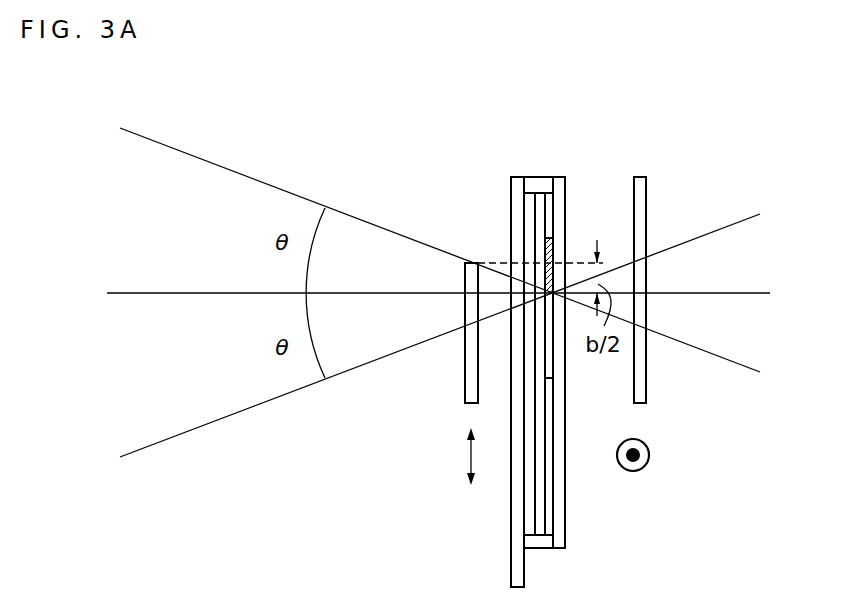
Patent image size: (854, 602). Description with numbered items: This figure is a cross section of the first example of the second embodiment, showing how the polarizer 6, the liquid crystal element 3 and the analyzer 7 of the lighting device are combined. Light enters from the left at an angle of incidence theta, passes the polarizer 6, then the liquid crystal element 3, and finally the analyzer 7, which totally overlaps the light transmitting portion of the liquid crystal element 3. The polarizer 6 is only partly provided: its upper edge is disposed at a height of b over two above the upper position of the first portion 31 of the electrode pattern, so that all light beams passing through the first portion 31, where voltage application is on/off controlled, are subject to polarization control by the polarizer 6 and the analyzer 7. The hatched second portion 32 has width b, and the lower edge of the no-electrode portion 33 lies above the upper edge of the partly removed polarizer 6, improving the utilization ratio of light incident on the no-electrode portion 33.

The liquid crystal element 3 is at (566, 501).
The polarizer 6 is at (470, 379).
The analyzer 7 is at (641, 380).
The first portion 31 is at (548, 363).
The second portion 32 is at (548, 251).
The no-electrode portion 33 is at (550, 207).